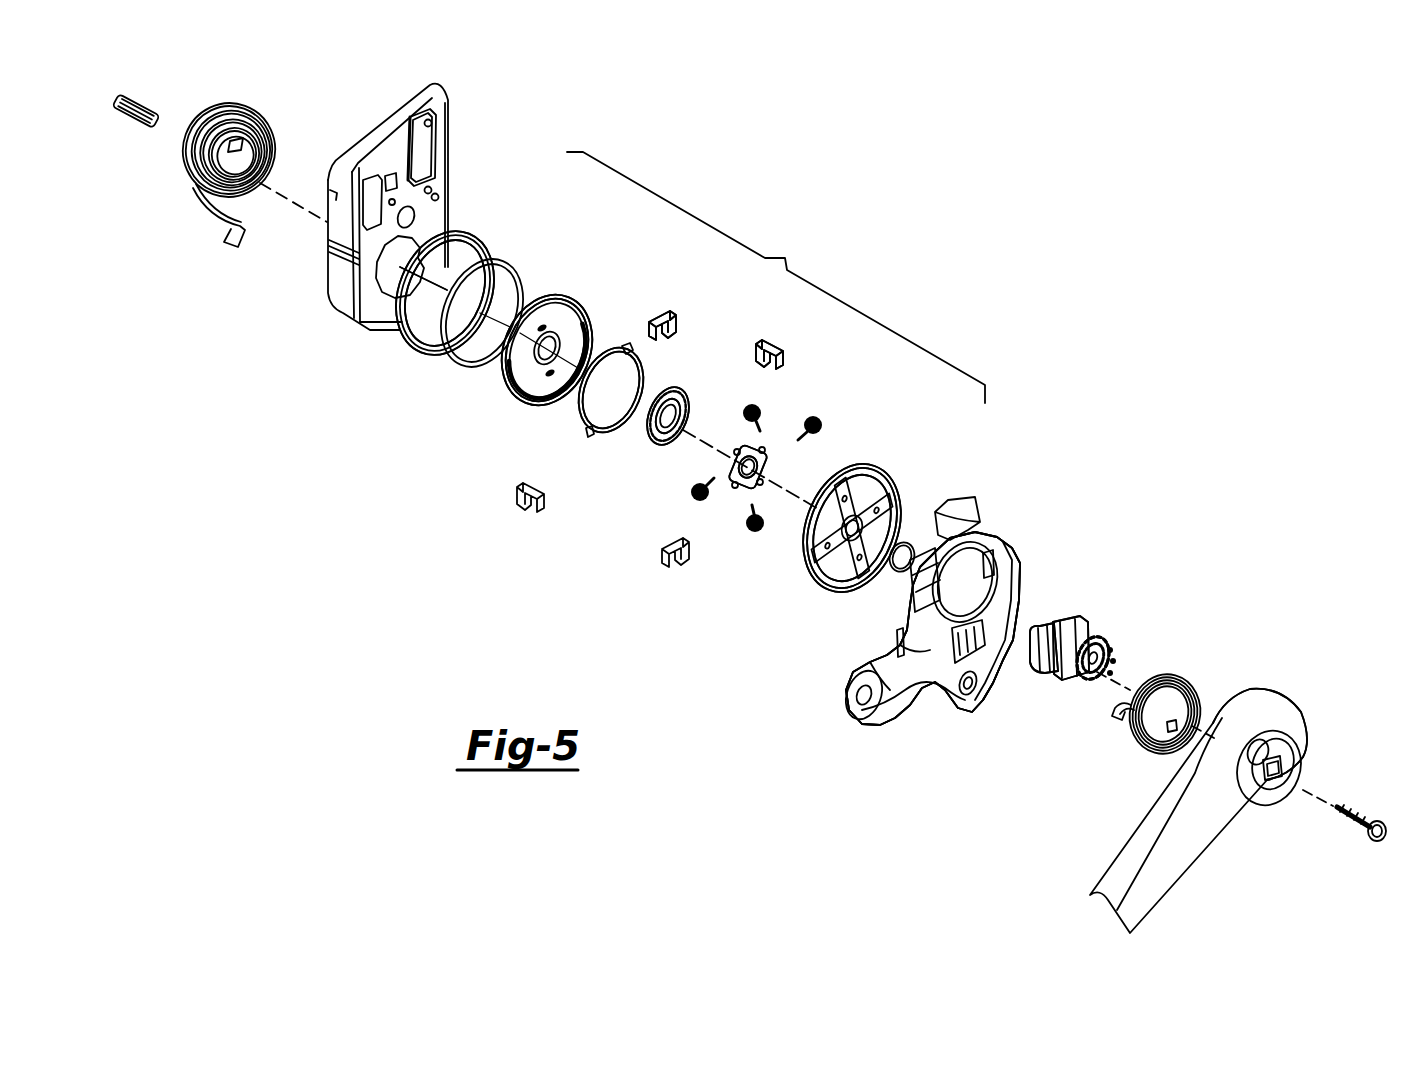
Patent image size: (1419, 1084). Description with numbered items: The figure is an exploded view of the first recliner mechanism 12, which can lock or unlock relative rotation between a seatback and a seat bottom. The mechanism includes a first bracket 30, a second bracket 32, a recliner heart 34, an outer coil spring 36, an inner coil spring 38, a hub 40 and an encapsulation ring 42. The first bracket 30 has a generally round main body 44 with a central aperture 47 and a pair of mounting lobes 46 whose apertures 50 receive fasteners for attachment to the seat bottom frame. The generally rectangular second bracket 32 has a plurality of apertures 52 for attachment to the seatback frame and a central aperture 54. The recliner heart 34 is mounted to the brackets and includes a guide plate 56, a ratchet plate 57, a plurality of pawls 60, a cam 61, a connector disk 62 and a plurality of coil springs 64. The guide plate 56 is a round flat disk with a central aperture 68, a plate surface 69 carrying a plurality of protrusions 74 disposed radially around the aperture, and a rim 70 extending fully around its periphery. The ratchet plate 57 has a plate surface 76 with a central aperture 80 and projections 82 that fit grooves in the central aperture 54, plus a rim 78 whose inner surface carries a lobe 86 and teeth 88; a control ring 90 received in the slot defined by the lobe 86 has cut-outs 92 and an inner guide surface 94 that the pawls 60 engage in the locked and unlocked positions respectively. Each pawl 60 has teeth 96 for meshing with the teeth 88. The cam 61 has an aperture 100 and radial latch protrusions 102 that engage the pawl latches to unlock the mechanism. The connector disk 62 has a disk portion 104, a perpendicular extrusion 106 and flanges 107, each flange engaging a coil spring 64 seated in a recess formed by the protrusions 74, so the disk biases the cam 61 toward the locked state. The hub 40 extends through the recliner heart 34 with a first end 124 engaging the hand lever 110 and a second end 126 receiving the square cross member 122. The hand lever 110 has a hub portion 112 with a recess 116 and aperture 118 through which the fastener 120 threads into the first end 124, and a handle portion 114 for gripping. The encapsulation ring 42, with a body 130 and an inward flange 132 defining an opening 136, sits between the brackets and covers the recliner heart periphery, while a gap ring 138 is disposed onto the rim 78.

The first recliner mechanism 12 is at (843, 775).
The first bracket 30 is at (1053, 523).
The second bracket 32 is at (331, 270).
The recliner heart 34 is at (776, 277).
The outer coil spring 36 is at (1180, 676).
The inner coil spring 38 is at (268, 123).
The hub 40 is at (1060, 697).
The encapsulation ring 42 is at (488, 237).
The main body 44 is at (1023, 567).
The mounting lobes 46 is at (983, 713).
The central aperture 47 is at (1000, 540).
The apertures 50 is at (978, 690).
The apertures 52 is at (438, 196).
The central aperture 54 is at (347, 313).
The guide plate 56 is at (802, 605).
The ratchet plate 57 is at (508, 415).
The pawls 60 is at (768, 340).
The cam 61 is at (652, 455).
The connector disk 62 is at (737, 495).
The coil springs 64 is at (753, 537).
The central aperture 68 is at (887, 487).
The plate surface 69 is at (866, 464).
The rim 70 is at (803, 545).
The protrusions 74 is at (863, 585).
The plate surface 76 is at (537, 398).
The rim 78 is at (566, 300).
The aperture 80 is at (590, 335).
The projections 82 is at (518, 388).
The lobe 86 is at (590, 355).
The teeth 88 is at (567, 393).
The control ring 90 is at (605, 436).
The cut-outs 92 is at (598, 418).
The inner guide surface 94 is at (624, 345).
The teeth 96 is at (678, 573).
The aperture 100 is at (690, 416).
The latch protrusions 102 is at (682, 398).
The disk portion 104 is at (768, 468).
The extrusion 106 is at (735, 455).
The flanges 107 is at (762, 495).
The hand lever 110 is at (1230, 861).
The hub portion 112 is at (1298, 723).
The handle portion 114 is at (1147, 907).
The recess 116 is at (1282, 750).
The aperture 118 is at (1262, 746).
The fastener 120 is at (1378, 842).
The cross member 122 is at (145, 103).
The first end 124 is at (1096, 638).
The second end 126 is at (1040, 627).
The body 130 is at (396, 325).
The flange 132 is at (495, 250).
The opening 136 is at (408, 350).
The gap ring 138 is at (447, 358).